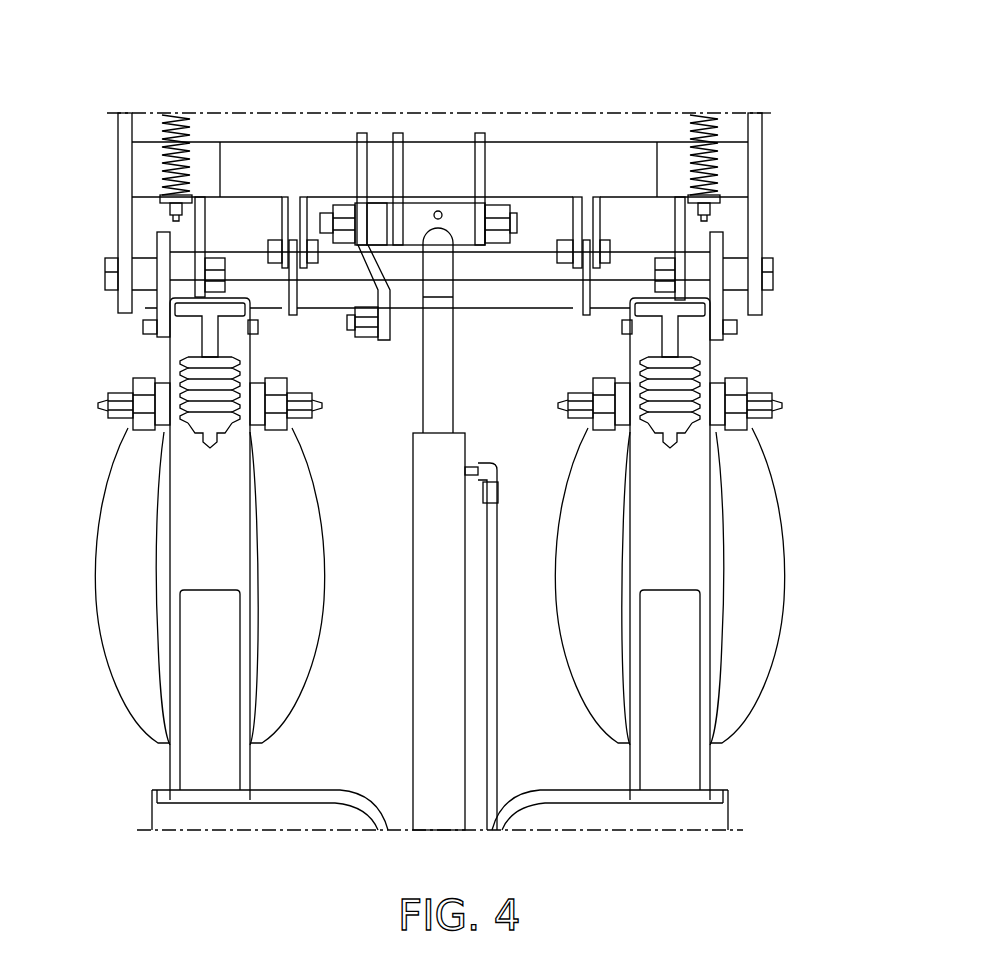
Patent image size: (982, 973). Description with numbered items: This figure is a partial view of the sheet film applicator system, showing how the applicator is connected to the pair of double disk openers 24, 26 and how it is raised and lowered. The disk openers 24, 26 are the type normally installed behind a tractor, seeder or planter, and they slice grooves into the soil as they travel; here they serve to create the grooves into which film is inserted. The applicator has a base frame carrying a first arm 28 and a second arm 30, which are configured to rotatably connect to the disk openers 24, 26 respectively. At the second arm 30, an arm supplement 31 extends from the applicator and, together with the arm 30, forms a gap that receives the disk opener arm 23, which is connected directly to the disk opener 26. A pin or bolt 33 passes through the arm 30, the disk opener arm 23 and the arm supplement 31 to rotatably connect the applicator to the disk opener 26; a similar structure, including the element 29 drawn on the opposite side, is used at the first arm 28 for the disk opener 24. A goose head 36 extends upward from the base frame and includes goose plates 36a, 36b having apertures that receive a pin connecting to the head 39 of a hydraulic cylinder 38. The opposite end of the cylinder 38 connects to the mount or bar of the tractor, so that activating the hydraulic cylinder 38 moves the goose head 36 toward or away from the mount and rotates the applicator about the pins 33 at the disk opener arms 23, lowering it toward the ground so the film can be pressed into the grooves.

The goose head 36 is at (438, 113).
The goose plate 36a is at (484, 160).
The goose plate 36b is at (383, 132).
The head of hydraulic cylinder 39 is at (463, 230).
The vertical plate 29 is at (657, 262).
The arm supplement 31 is at (207, 232).
The second arm 30 is at (125, 168).
The first arm 28 is at (757, 236).
The disk opener arm 23 is at (163, 243).
The pin or bolt 33 is at (102, 285).
The double disk opener 26 is at (98, 707).
The double disk opener 24 is at (782, 707).
The hydraulic cylinder 38 is at (412, 768).